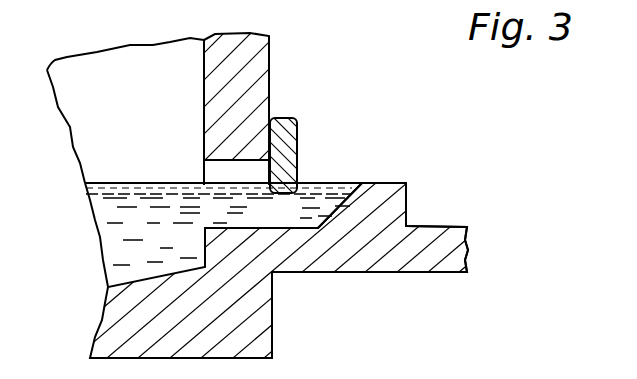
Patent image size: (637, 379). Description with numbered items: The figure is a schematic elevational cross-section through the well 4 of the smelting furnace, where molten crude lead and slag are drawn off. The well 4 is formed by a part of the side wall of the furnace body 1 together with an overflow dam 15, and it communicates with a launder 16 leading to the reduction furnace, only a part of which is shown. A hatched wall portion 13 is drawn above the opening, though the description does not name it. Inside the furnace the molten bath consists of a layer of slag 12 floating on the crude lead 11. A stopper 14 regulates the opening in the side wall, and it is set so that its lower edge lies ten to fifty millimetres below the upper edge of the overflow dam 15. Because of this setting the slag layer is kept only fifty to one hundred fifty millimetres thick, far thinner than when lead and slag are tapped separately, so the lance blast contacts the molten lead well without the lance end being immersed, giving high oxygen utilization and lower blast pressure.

The furnace body 1 is at (113, 97).
The well 4 is at (320, 186).
The crude lead 11 is at (118, 252).
The slag 12 is at (125, 182).
The sealing ring 13 is at (258, 47).
The stopper 14 is at (289, 117).
The overflow dam 15 is at (386, 187).
The launder 16 is at (465, 227).